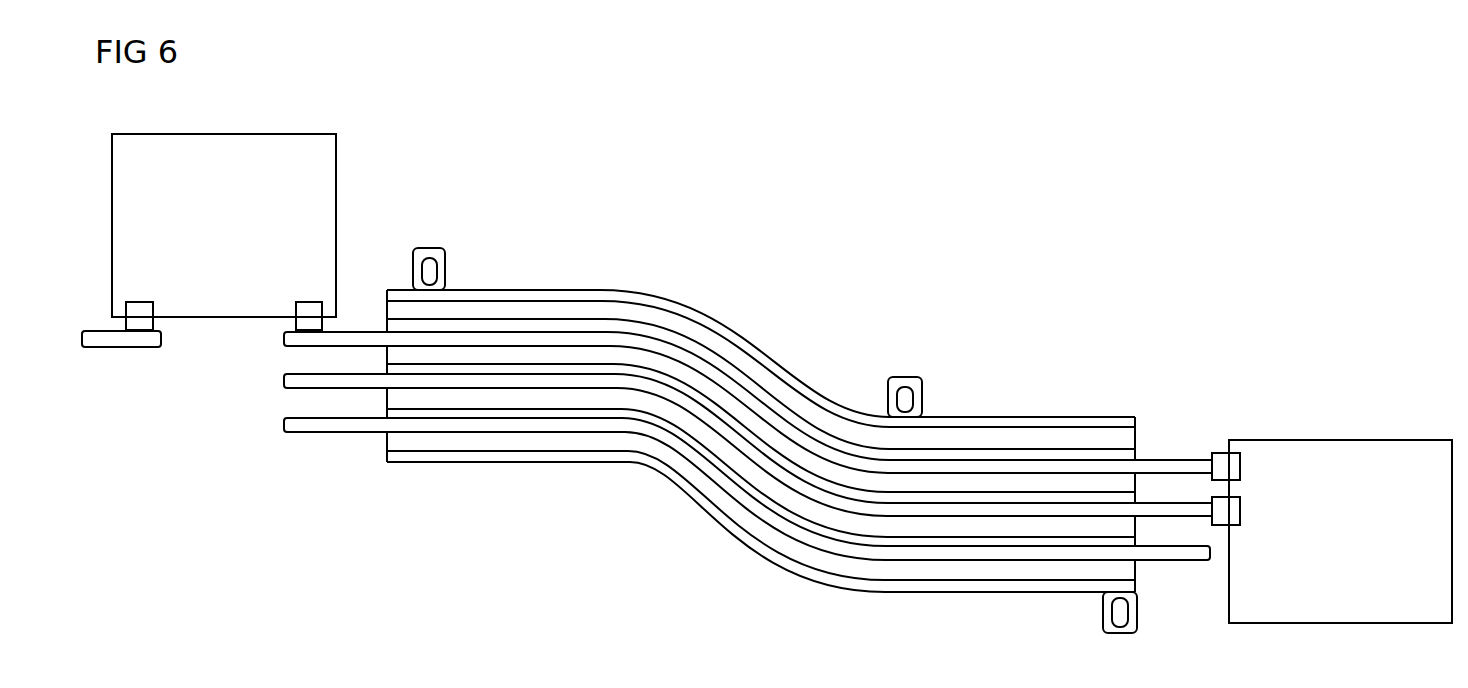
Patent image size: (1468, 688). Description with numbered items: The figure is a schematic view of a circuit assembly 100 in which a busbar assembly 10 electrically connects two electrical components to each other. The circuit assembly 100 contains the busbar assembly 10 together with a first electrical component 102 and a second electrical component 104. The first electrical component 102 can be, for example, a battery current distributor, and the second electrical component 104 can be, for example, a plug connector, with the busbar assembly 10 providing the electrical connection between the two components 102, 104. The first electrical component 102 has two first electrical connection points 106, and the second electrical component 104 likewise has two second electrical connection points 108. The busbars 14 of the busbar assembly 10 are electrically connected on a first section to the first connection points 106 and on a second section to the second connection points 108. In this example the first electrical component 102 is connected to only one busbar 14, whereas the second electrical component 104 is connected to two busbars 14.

The circuit assembly 100 is at (1132, 210).
The busbar assembly 10 is at (793, 287).
The busbar 14 is at (312, 377).
The first electrical component 102 is at (320, 187).
The second electrical component 104 is at (1330, 468).
The first electrical connection point 106 is at (148, 318).
The second electrical connection point 108 is at (1227, 510).